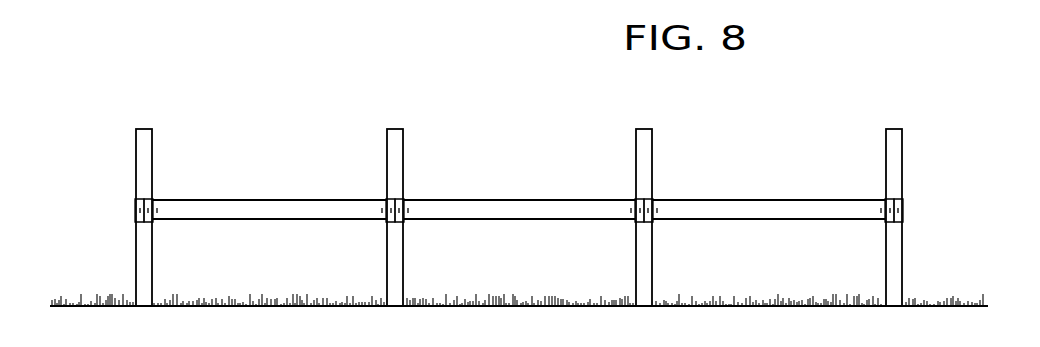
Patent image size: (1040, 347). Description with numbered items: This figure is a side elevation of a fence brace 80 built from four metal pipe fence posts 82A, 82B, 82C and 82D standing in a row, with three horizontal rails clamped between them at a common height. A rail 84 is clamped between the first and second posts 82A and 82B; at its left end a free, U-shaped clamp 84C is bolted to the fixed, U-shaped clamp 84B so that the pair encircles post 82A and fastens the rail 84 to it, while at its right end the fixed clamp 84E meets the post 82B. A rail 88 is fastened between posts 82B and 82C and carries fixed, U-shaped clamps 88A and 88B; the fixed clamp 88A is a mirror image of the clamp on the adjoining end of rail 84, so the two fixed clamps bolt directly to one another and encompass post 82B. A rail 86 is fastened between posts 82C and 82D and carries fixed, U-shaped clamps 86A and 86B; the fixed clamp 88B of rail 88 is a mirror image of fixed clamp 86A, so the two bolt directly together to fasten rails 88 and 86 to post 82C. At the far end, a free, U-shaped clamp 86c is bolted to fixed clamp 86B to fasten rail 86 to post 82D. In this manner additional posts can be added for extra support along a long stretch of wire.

The fence brace 80 is at (935, 72).
The metal pipe fence post 82A is at (153, 268).
The metal pipe fence post 82B is at (403, 268).
The metal pipe fence post 82C is at (652, 268).
The metal pipe fence post 82D is at (902, 257).
The rail 84 is at (298, 200).
The fixed U-shaped clamp 84B is at (153, 200).
The free U-shaped clamp 84C is at (136, 217).
The rail connector bracket 84E is at (387, 200).
The rail 86 is at (798, 200).
The fixed U-shaped clamp 86A is at (655, 200).
The fixed U-shaped clamp 86B is at (886, 220).
The free U-shaped clamp 86c is at (902, 205).
The rail 88 is at (560, 200).
The fixed U-shaped clamp 88A is at (403, 202).
The fixed U-shaped clamp 88B is at (636, 220).